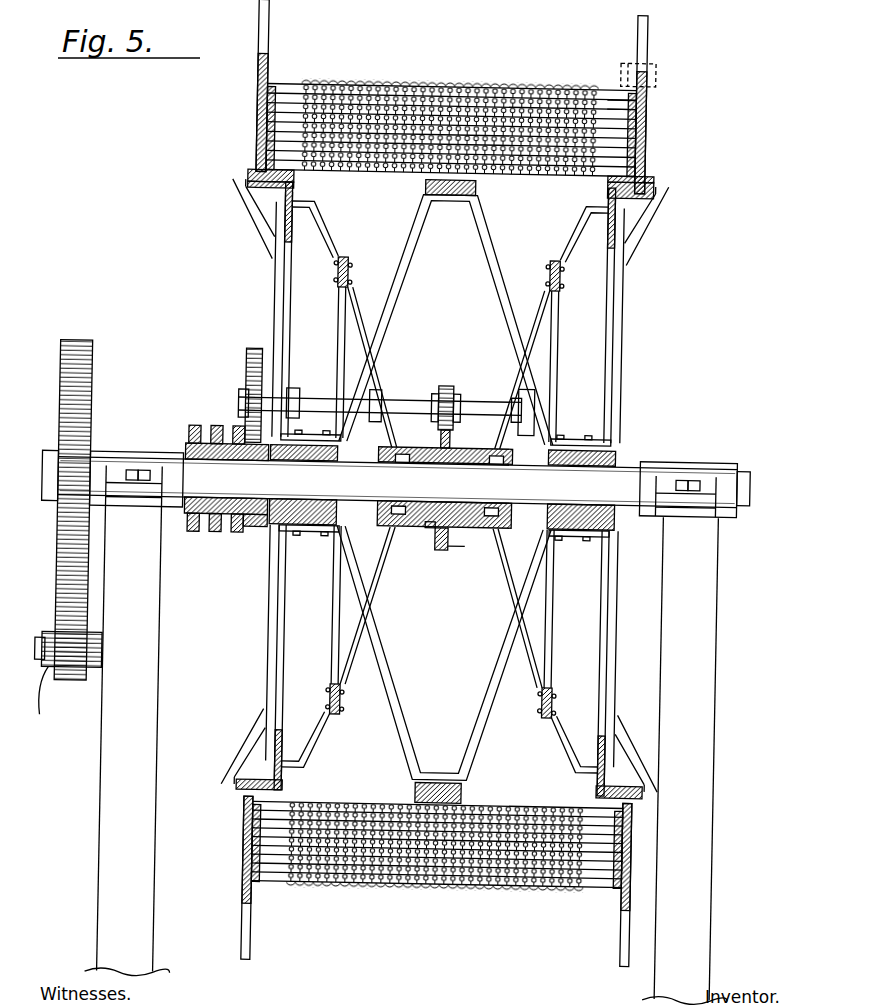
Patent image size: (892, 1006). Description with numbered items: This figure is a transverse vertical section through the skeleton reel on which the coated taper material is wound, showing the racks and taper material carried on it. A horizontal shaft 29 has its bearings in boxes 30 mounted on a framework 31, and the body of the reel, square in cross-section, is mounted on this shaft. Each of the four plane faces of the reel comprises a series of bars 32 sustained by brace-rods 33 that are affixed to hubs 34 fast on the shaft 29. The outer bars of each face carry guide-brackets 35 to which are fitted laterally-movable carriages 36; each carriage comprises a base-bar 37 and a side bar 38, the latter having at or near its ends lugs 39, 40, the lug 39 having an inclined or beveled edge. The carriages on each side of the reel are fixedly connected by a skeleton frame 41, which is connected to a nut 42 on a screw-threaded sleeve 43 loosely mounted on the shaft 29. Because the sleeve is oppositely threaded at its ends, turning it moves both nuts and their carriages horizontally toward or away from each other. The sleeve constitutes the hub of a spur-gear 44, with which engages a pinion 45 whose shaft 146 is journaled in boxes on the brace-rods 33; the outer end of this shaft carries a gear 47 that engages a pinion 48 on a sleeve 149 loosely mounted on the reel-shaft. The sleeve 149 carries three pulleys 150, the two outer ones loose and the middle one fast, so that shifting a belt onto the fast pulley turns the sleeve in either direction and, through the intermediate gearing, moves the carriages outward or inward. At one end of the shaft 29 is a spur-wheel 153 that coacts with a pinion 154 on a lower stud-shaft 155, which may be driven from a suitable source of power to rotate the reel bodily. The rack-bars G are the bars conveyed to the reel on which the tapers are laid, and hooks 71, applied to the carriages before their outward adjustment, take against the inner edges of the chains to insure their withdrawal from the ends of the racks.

The horizontal shaft 29 is at (380, 502).
The boxes 30 is at (150, 448).
The framework 31 is at (165, 714).
The bars 32 is at (290, 188).
The brace-rods 33 is at (492, 288).
The hubs 34 is at (322, 528).
The guide-brackets 35 is at (242, 210).
The carriages 36 is at (250, 170).
The base-bar 37 is at (242, 178).
The side bar 38 is at (255, 74).
The lug 39 is at (268, 19).
The lug 40 is at (254, 937).
The skeleton frame 41 is at (344, 264).
The nut 42 is at (416, 440).
The screw-threaded sleeve 43 is at (432, 528).
The spur-gear 44 is at (453, 548).
The pinion 45 is at (448, 386).
The gear 47 is at (250, 352).
The pinion 48 is at (262, 532).
The hooks 71 is at (651, 70).
The rack-bars G is at (640, 96).
The shaft 146 is at (478, 400).
The sleeve 149 is at (250, 548).
The pulleys 150 is at (237, 429).
The spur-wheel 153 is at (92, 372).
The pinion 154 is at (78, 676).
The stud-shaft 155 is at (58, 705).